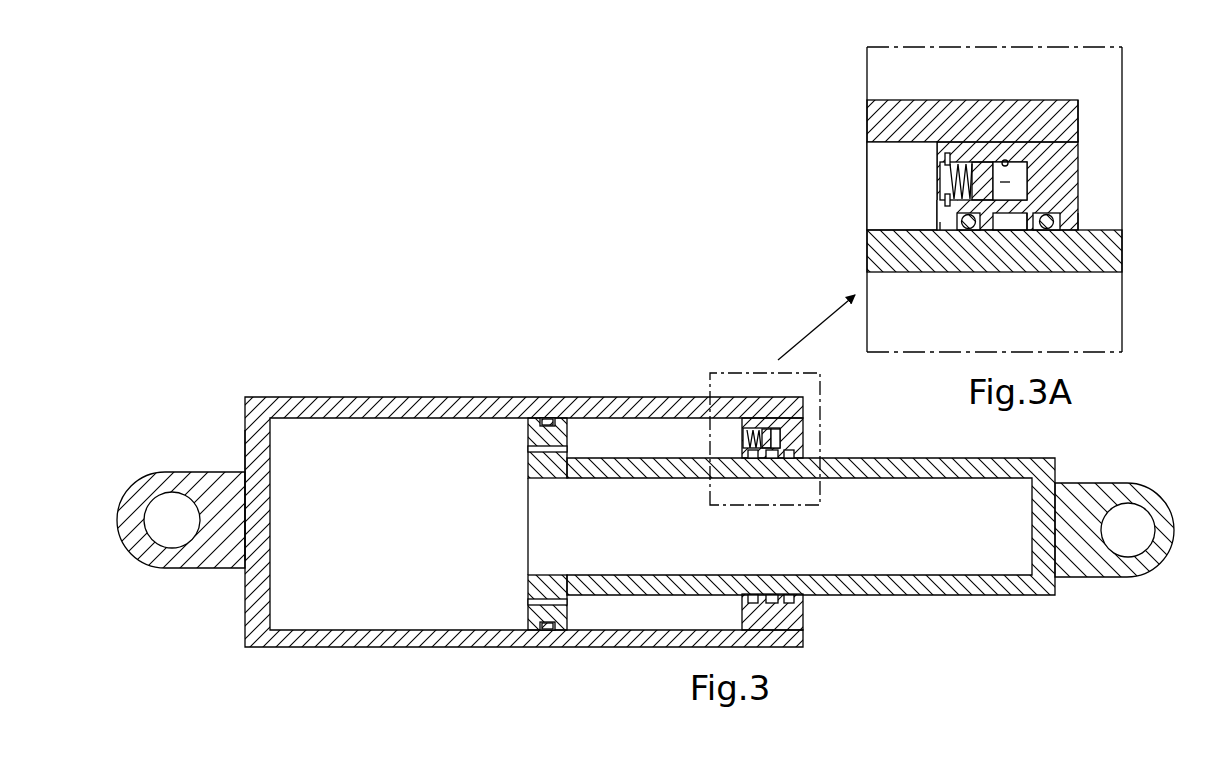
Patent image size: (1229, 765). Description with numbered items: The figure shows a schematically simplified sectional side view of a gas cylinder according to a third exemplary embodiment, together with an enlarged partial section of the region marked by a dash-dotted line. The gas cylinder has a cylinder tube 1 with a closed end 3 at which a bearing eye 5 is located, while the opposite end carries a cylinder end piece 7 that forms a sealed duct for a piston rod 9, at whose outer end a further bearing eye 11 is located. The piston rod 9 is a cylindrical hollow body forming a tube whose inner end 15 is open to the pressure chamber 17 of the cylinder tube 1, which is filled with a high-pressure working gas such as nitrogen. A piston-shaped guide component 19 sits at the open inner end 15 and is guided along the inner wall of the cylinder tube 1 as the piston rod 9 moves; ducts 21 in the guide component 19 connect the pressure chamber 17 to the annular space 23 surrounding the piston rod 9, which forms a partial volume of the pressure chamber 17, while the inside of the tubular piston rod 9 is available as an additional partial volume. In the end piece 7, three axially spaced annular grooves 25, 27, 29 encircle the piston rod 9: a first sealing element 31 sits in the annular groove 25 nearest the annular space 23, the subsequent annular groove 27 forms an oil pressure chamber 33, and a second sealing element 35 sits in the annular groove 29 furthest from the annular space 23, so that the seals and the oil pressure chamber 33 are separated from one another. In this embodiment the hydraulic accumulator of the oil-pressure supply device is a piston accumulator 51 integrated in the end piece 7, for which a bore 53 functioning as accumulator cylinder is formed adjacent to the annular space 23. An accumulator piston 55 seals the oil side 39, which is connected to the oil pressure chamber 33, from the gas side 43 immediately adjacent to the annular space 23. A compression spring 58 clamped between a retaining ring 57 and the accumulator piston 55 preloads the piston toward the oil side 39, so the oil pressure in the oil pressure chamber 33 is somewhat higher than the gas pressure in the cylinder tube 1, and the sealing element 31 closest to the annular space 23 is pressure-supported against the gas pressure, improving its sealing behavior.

In FIG. 3, the cylinder tube 1 is at (437, 405).
In FIG. 3A, the cylinder tube 1 is at (888, 118).
In FIG. 3, the closed end 3 is at (243, 437).
In FIG. 3, the bearing eye 5 is at (165, 498).
In FIG. 3, the cylinder end piece 7 is at (782, 615).
In FIG. 3A, the cylinder end piece 7 is at (1065, 136).
In FIG. 3, the piston rod 9 is at (887, 582).
In FIG. 3A, the piston rod 9 is at (1095, 262).
In FIG. 3, the bearing eye 11 is at (1140, 560).
In FIG. 3, the inner end 15 is at (527, 578).
In FIG. 3, the pressure chamber 17 is at (343, 455).
In FIG. 3, the guide component 19 is at (540, 465).
In FIG. 3, the ducts 21 is at (530, 452).
In FIG. 3, the annular space 23 is at (602, 430).
In FIG. 3A, the annular space 23 is at (885, 181).
In FIG. 3A, the annular groove 25 is at (945, 228).
In FIG. 3A, the annular groove 27 is at (1008, 232).
In FIG. 3A, the annular groove 29 is at (1080, 226).
In FIG. 3, the first sealing element 31 is at (752, 596).
In FIG. 3A, the first sealing element 31 is at (962, 231).
In FIG. 3, the oil pressure chamber 33 is at (768, 596).
In FIG. 3A, the oil pressure chamber 33 is at (1028, 233).
In FIG. 3, the second sealing element 35 is at (787, 598).
In FIG. 3A, the second sealing element 35 is at (1058, 233).
In FIG. 3A, the oil side 39 is at (1080, 106).
In FIG. 3A, the gas side 43 is at (942, 182).
In FIG. 3, the piston accumulator 51 is at (780, 427).
In FIG. 3A, the piston accumulator 51 is at (1030, 173).
In FIG. 3, the bore 53 is at (785, 420).
In FIG. 3A, the bore 53 is at (1005, 180).
In FIG. 3A, the accumulator piston 55 is at (985, 175).
In FIG. 3A, the retaining ring 57 is at (950, 160).
In FIG. 3A, the compression spring 58 is at (965, 170).